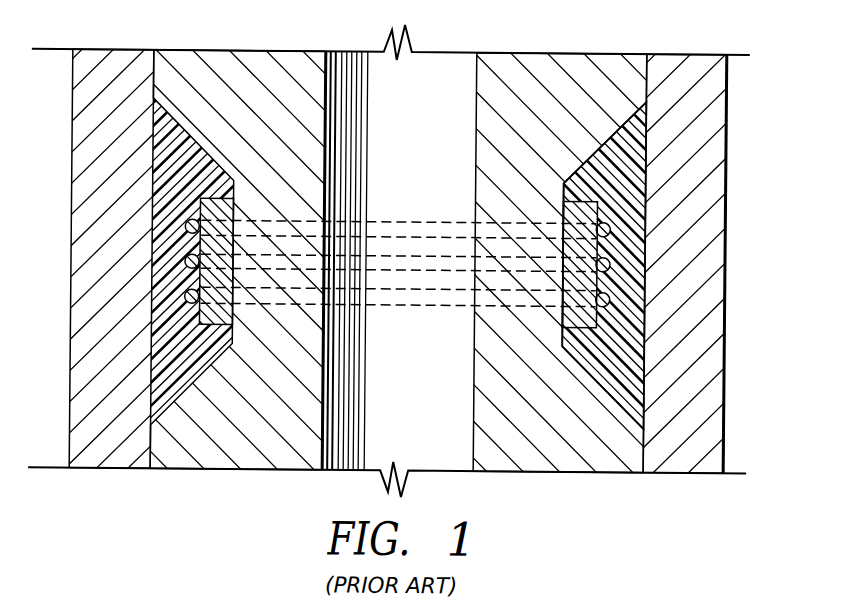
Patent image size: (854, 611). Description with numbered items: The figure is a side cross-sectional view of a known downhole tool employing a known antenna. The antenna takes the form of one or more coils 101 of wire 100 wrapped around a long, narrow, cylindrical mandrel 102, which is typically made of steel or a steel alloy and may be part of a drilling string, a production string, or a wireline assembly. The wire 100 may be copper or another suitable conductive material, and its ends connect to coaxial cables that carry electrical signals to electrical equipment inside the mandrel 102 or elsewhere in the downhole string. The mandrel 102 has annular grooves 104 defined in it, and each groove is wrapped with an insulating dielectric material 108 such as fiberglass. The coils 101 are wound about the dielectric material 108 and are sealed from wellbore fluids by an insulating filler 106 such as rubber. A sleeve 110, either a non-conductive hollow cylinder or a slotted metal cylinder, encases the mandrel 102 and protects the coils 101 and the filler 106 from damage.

The wire 100 is at (534, 305).
The coils 101 is at (443, 288).
The mandrel 102 is at (248, 64).
The annular grooves 104 is at (618, 391).
The insulating filler 106 is at (633, 278).
The dielectric material 108 is at (585, 315).
The sleeve 110 is at (727, 106).